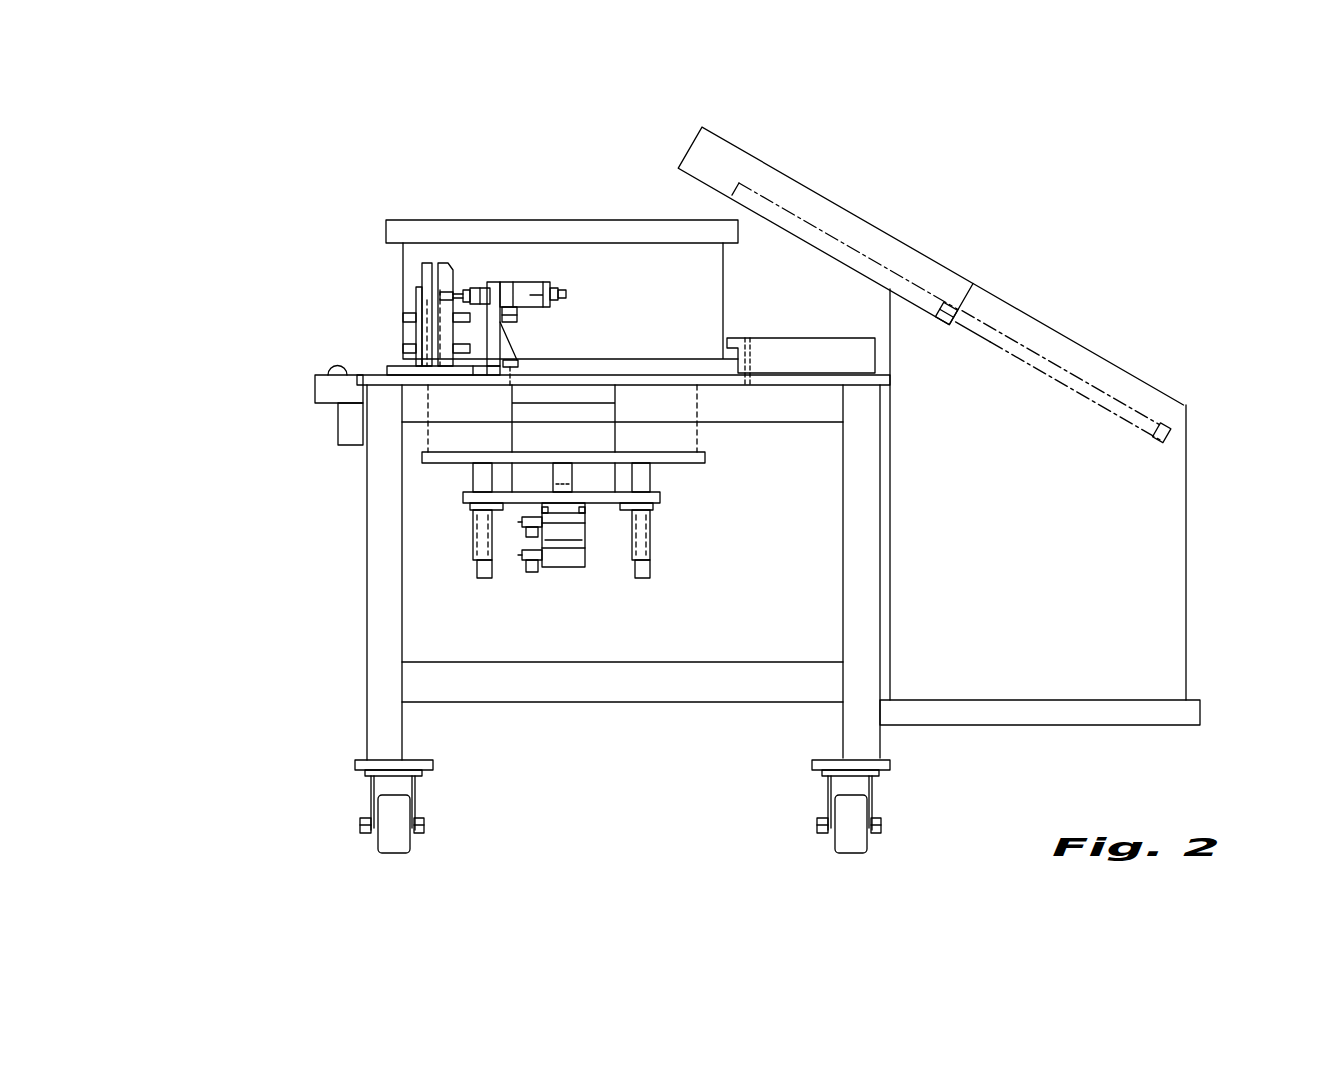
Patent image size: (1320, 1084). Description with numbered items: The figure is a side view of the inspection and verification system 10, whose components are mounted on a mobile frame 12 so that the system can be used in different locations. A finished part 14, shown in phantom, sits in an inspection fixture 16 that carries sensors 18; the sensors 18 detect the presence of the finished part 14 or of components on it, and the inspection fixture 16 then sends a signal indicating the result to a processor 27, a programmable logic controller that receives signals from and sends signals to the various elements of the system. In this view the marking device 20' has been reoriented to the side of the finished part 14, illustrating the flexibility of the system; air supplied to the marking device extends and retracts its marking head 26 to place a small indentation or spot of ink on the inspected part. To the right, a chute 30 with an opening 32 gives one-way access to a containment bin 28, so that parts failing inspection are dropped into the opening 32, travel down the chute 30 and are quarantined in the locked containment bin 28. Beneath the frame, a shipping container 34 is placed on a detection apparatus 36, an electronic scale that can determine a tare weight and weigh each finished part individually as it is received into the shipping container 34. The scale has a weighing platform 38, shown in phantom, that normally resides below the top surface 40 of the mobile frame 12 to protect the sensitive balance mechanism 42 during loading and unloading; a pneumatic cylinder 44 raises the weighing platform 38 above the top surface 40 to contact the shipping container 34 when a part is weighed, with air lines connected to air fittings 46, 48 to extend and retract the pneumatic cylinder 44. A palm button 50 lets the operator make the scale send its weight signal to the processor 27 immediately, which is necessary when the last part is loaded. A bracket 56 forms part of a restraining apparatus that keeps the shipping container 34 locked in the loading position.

The inspection and verification system 10 is at (263, 143).
The mobile frame 12 is at (366, 590).
The finished part 14 is at (434, 345).
The inspection fixture 16 is at (448, 262).
The sensors 18 is at (403, 347).
The marking device 20' is at (548, 223).
The marking head 26 is at (470, 296).
The processor 27 is at (337, 427).
The containment bin 28 is at (1190, 568).
The chute 30 is at (880, 228).
The opening 32 is at (686, 152).
The shipping container 34 is at (386, 232).
The detection apparatus 36 is at (708, 507).
The weighing platform 38 is at (697, 432).
The top surface 40 is at (395, 365).
The balance mechanism 42 is at (665, 570).
The pneumatic cylinder 44 is at (563, 600).
The air fitting 46 is at (532, 537).
The air fitting 48 is at (532, 572).
The palm button 50 is at (313, 387).
The bracket 56 is at (765, 338).